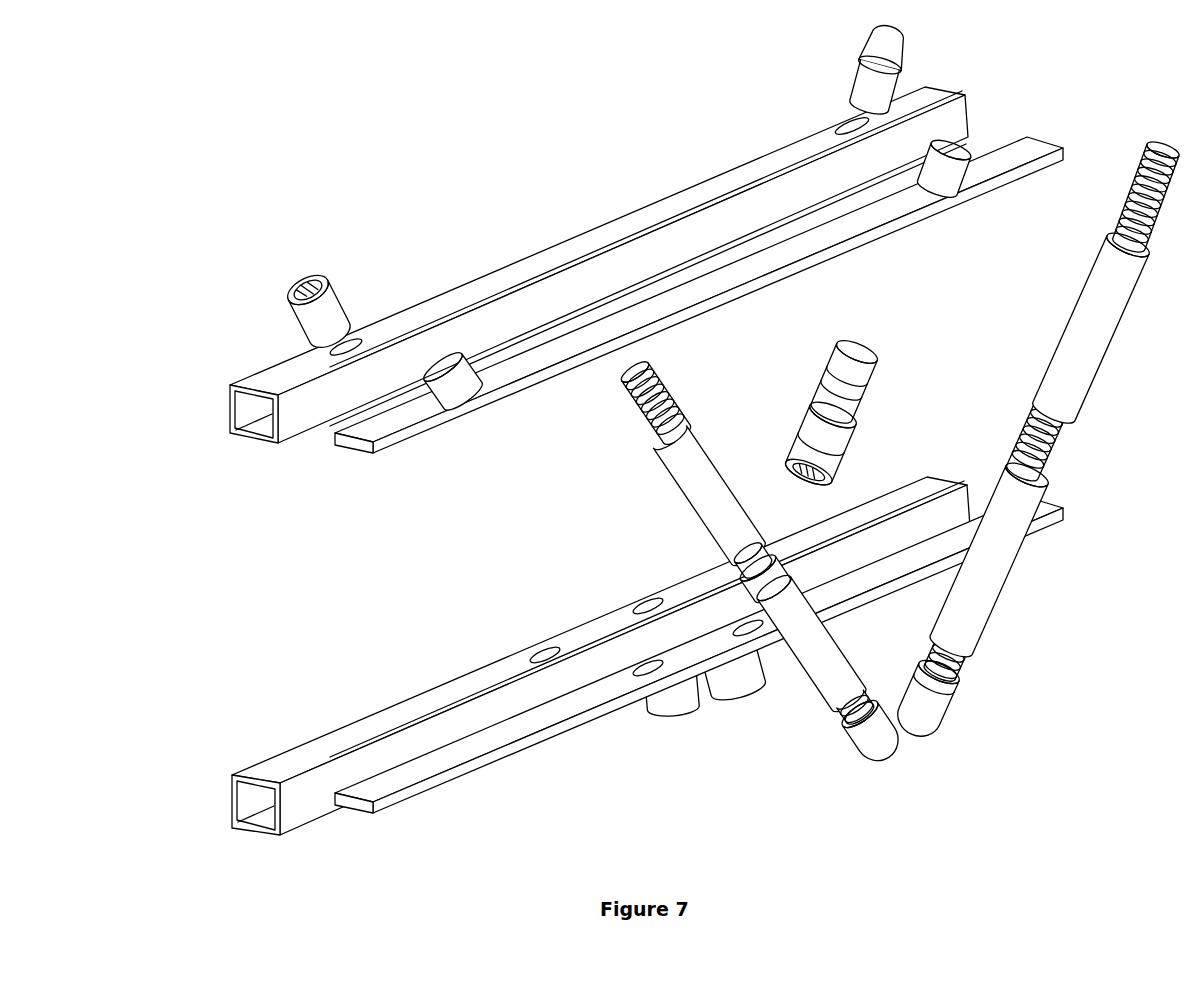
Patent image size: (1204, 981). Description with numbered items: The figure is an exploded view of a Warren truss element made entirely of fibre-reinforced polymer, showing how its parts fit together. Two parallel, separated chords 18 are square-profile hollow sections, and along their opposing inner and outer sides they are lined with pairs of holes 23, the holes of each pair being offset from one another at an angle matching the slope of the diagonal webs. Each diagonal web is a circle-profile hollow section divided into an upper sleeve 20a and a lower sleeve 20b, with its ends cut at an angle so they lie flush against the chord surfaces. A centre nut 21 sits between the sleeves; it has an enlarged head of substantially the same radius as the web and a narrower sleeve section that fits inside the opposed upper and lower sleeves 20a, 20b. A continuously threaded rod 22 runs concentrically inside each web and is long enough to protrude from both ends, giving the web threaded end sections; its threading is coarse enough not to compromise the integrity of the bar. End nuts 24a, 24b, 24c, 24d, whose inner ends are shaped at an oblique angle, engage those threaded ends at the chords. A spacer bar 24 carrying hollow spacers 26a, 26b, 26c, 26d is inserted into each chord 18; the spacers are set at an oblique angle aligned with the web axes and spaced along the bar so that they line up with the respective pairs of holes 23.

The chord 18 is at (265, 370).
The upper sleeve 20a is at (1067, 353).
The lower sleeve 20b is at (1000, 580).
The centre nut 21 is at (825, 455).
The threaded rod 22 is at (1148, 150).
The hole 23 is at (852, 193).
The spacer bar 24 is at (350, 458).
The end nut 24a is at (327, 275).
The end nut 24b is at (860, 70).
The end nut 24c is at (873, 730).
The end nut 24d is at (940, 699).
The hollow spacer 26a is at (457, 383).
The hollow spacer 26b is at (950, 172).
The hollow spacer 26c is at (662, 705).
The hollow spacer 26d is at (735, 680).